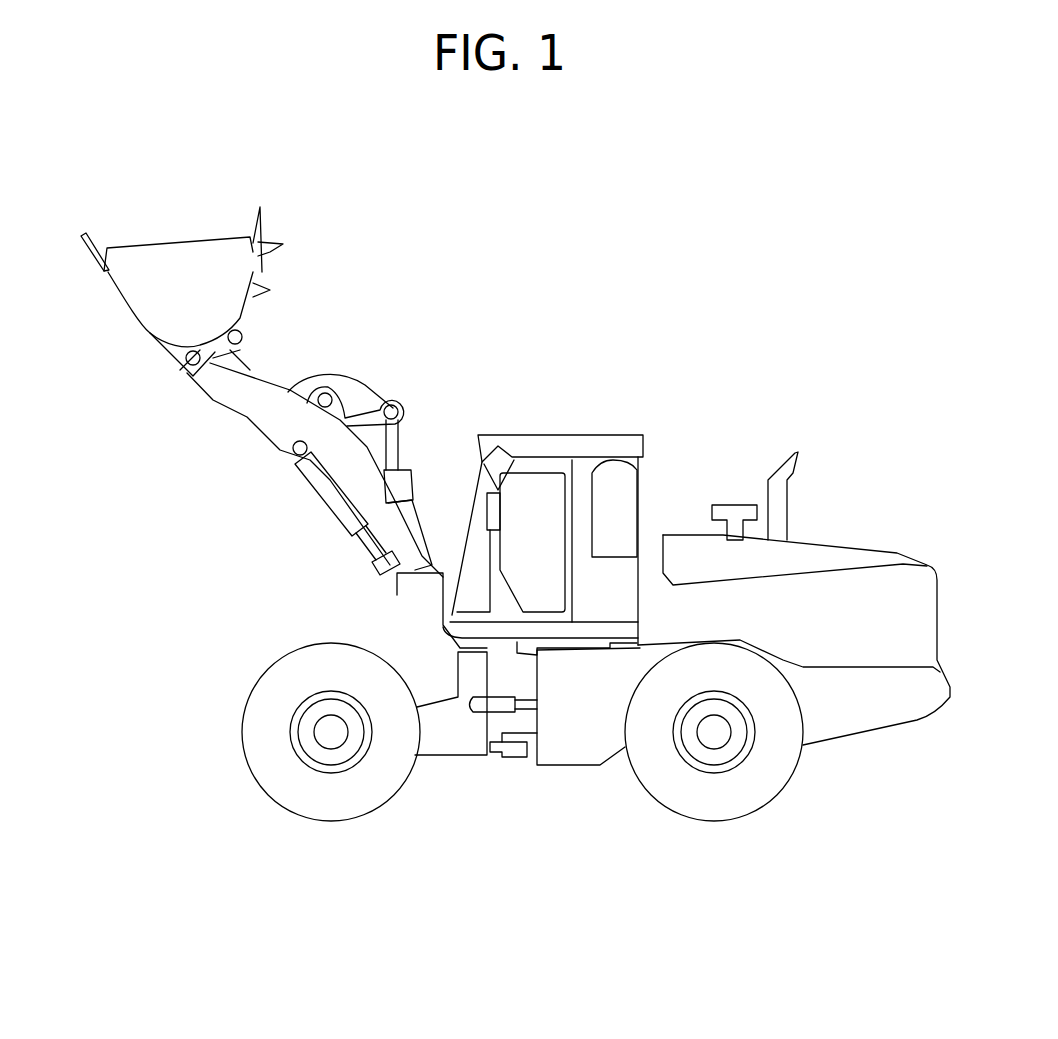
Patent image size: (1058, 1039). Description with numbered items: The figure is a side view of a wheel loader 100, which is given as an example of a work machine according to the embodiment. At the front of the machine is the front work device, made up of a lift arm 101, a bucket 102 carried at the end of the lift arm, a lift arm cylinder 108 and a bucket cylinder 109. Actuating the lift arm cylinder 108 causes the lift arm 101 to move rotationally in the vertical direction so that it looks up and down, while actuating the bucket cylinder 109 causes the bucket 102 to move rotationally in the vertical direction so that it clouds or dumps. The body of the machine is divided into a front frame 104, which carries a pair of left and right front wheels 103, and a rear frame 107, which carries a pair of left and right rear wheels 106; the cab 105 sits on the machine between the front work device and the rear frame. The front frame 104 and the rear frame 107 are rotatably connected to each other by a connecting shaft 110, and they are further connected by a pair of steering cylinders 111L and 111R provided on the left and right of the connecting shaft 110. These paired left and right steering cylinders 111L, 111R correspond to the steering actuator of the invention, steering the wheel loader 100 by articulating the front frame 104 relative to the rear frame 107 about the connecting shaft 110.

The wheel loader 100 is at (787, 330).
The lift arm 101 is at (258, 400).
The bucket 102 is at (140, 297).
The front wheel 103 is at (293, 795).
The front frame 104 is at (435, 745).
The cab 105 is at (582, 473).
The rear wheel 106 is at (725, 797).
The rear frame 107 is at (882, 718).
The lift arm cylinder 108 is at (333, 527).
The bucket cylinder 109 is at (402, 437).
The connecting shaft 110 is at (520, 760).
The steering cylinder 111L is at (483, 707).
The steering cylinder 111R is at (483, 707).